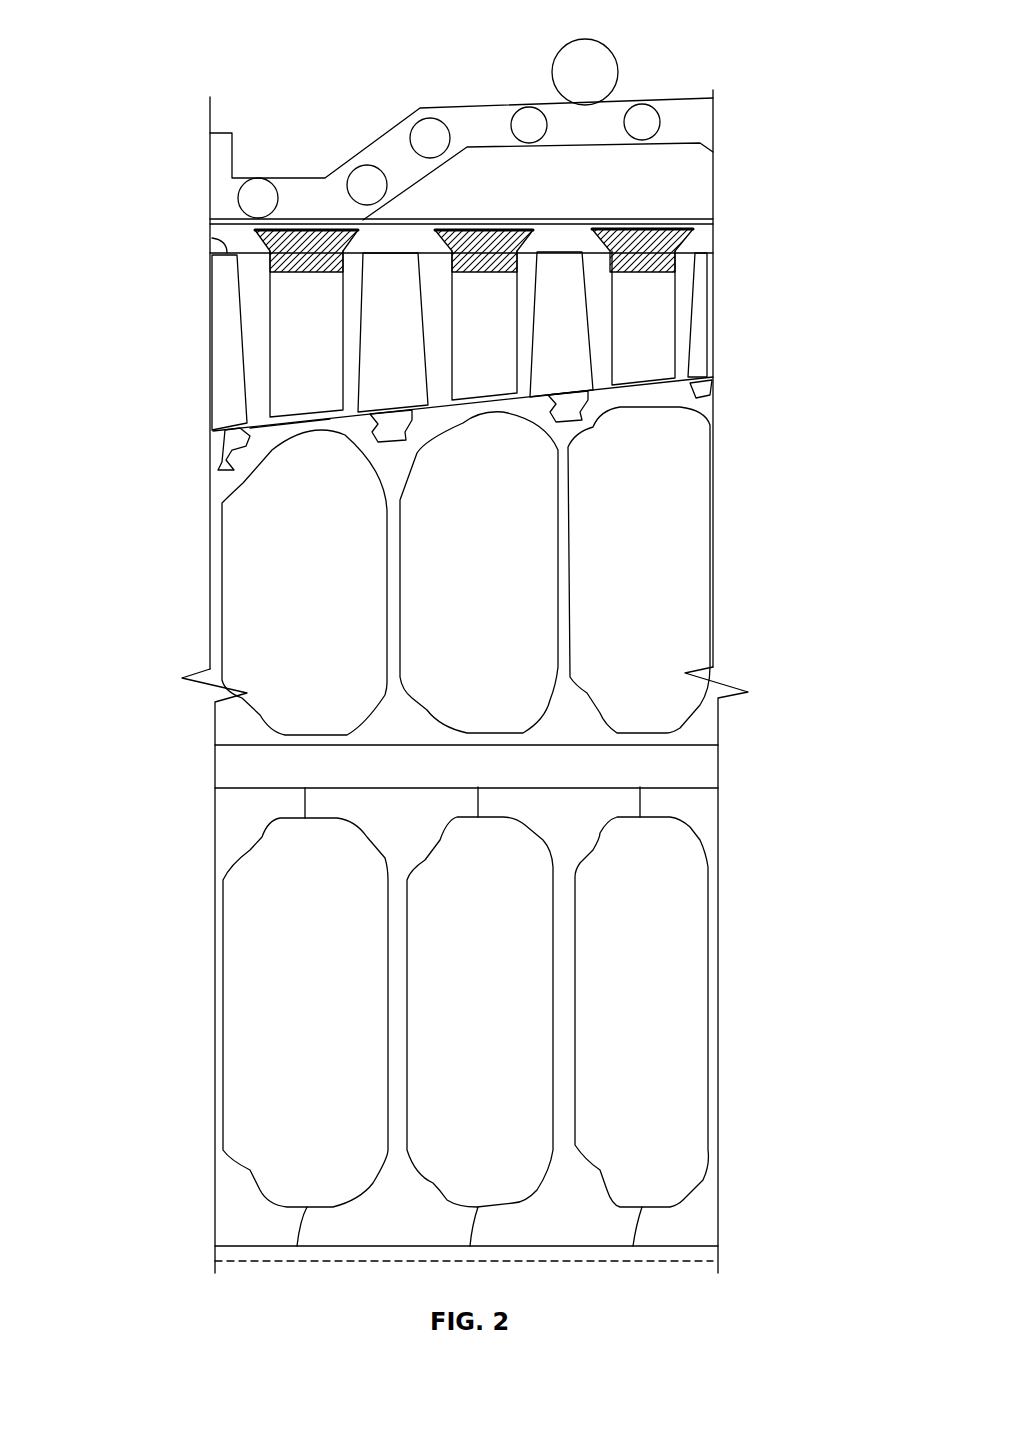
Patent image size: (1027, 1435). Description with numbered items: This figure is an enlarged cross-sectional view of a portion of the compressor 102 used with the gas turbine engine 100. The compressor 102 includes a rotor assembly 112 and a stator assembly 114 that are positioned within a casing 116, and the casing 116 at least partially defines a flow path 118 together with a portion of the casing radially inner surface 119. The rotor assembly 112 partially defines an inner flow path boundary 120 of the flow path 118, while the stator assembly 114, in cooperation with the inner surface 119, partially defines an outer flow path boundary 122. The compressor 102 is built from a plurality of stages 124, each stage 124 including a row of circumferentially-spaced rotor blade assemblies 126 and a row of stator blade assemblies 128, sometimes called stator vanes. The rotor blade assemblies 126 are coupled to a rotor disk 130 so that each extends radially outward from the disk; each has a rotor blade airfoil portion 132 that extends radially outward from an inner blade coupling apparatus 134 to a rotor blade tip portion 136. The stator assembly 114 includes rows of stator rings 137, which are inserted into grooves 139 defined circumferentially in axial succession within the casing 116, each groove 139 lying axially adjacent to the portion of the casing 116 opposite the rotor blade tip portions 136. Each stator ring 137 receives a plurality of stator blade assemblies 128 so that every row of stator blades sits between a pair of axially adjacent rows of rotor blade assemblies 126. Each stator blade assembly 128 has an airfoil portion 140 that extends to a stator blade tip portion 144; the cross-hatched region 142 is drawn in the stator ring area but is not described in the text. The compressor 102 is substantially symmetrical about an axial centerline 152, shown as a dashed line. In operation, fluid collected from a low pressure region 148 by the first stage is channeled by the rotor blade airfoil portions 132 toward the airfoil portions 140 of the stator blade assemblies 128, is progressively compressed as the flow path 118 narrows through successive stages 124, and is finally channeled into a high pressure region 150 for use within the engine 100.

The gas turbine engine 100 is at (158, 36).
The compressor 102 is at (296, 72).
The rotor assembly 112 is at (212, 1080).
The stator assembly 114 is at (430, 98).
The casing 116 is at (706, 238).
The flow path 118 is at (186, 269).
The casing radially inner surface 119 is at (211, 234).
The inner flow path boundary 120 is at (712, 392).
The outer flow path boundary 122 is at (535, 250).
The stage 124 is at (607, 168).
The rotor blade assembly 126 is at (430, 281).
The stator blade assembly 128 is at (350, 372).
The rotor disk 130 is at (386, 595).
The rotor blade airfoil portion 132 is at (416, 328).
The inner blade coupling apparatus 134 is at (223, 440).
The rotor blade tip portion 136 is at (217, 372).
The stator ring 137 is at (318, 242).
The groove 139 is at (645, 226).
The airfoil portion 140 is at (328, 349).
The hatched insert 142 is at (478, 243).
The stator blade tip portion 144 is at (300, 432).
The low pressure region 148 is at (186, 329).
The high pressure region 150 is at (722, 268).
The axial centerline 152 is at (643, 1263).